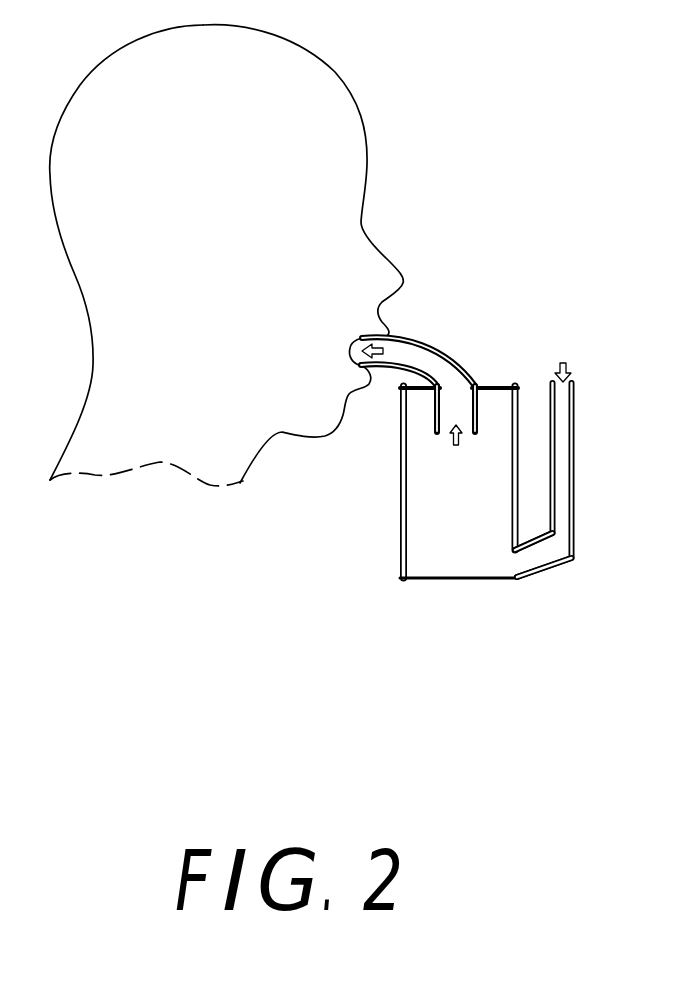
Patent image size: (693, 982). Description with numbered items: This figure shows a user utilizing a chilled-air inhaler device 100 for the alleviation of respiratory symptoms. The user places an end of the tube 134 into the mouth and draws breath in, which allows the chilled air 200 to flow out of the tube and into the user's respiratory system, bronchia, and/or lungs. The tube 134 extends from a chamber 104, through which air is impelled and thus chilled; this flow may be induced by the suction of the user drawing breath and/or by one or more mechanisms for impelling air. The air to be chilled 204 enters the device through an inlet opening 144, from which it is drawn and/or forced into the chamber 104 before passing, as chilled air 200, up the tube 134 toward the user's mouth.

The breath collection device 100 is at (450, 478).
The chamber 104 is at (467, 502).
The tube 134 is at (433, 352).
The inlet opening 144 is at (507, 562).
The chilled air 200 is at (383, 350).
The air to be chilled 204 is at (563, 363).